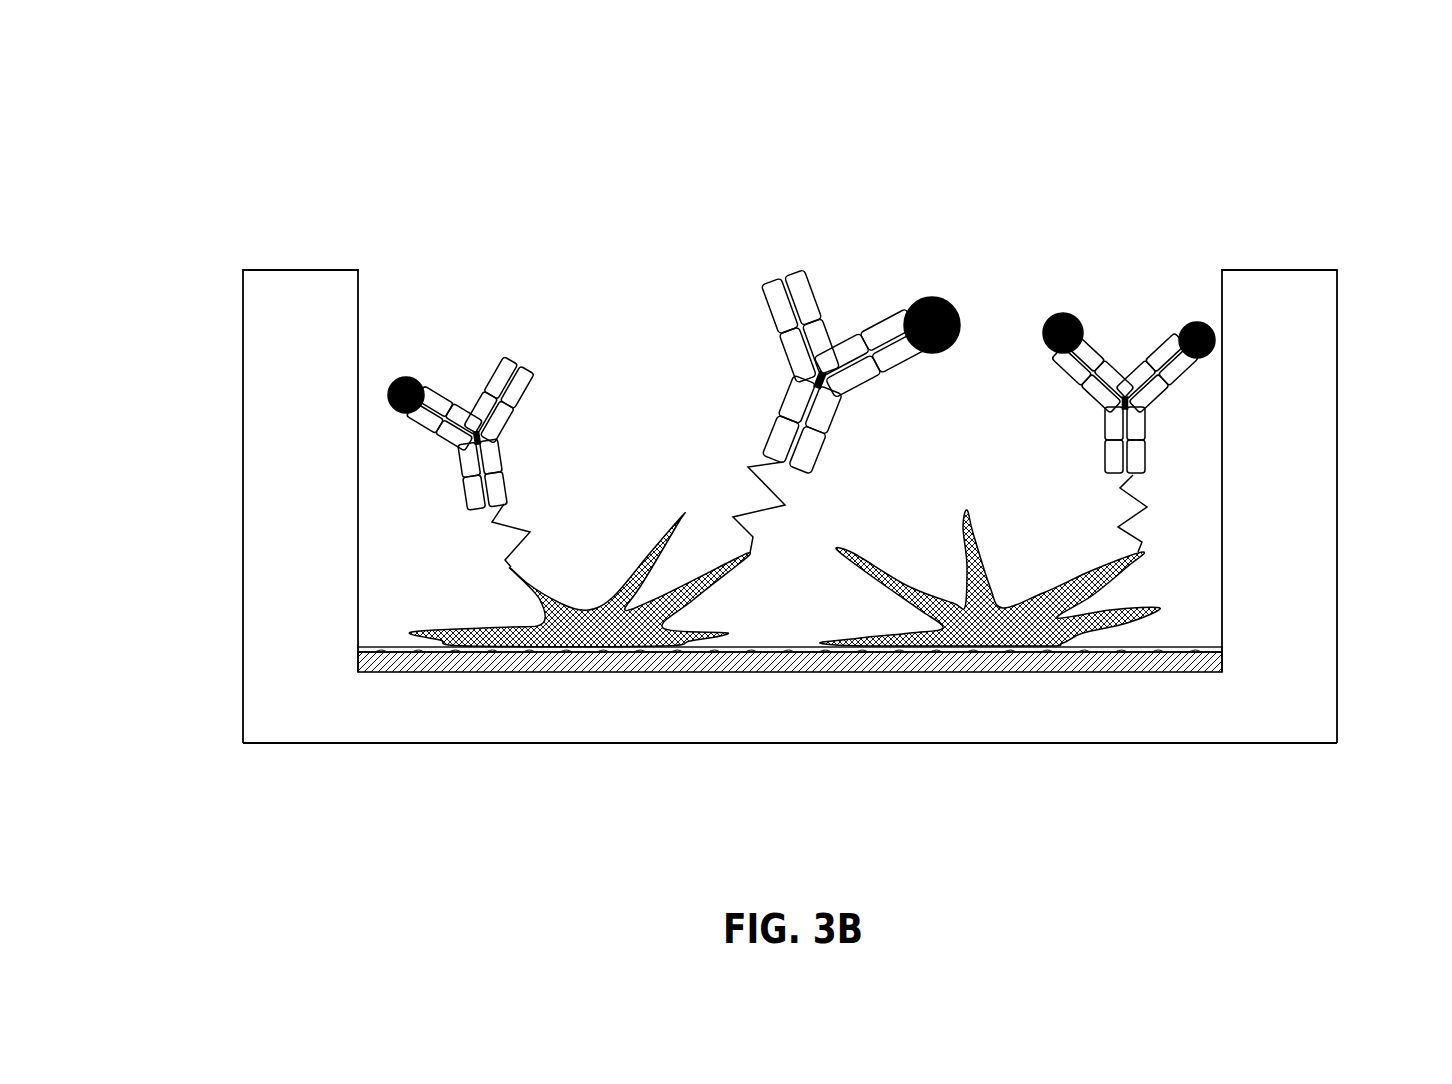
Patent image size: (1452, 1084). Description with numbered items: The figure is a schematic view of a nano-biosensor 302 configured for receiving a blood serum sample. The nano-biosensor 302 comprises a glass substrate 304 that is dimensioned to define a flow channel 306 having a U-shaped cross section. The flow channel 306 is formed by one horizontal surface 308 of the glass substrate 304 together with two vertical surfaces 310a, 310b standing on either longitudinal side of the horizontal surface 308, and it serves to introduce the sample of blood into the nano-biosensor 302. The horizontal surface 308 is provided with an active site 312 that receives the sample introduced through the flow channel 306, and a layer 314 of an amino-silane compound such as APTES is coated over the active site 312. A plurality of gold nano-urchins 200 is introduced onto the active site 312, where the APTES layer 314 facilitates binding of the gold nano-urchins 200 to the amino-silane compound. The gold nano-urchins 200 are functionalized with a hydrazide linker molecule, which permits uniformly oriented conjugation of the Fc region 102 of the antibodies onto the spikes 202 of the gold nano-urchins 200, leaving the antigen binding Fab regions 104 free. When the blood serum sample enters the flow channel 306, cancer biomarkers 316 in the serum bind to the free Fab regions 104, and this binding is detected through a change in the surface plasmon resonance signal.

The nano-biosensor 302 is at (786, 444).
The glass substrate 304 is at (789, 544).
The flow channel 306 is at (803, 428).
The horizontal surface 308 is at (790, 781).
The vertical surface 310a is at (254, 506).
The vertical surface 310b is at (1325, 506).
The active site 312 is at (745, 744).
The layer of amino-silane compound 314 is at (380, 647).
The cancer biomarkers 316 is at (801, 334).
The Fc region 102 is at (802, 390).
The Fab regions 104 is at (802, 390).
The gold nano-urchins 200 is at (784, 575).
The spikes 202 is at (855, 514).